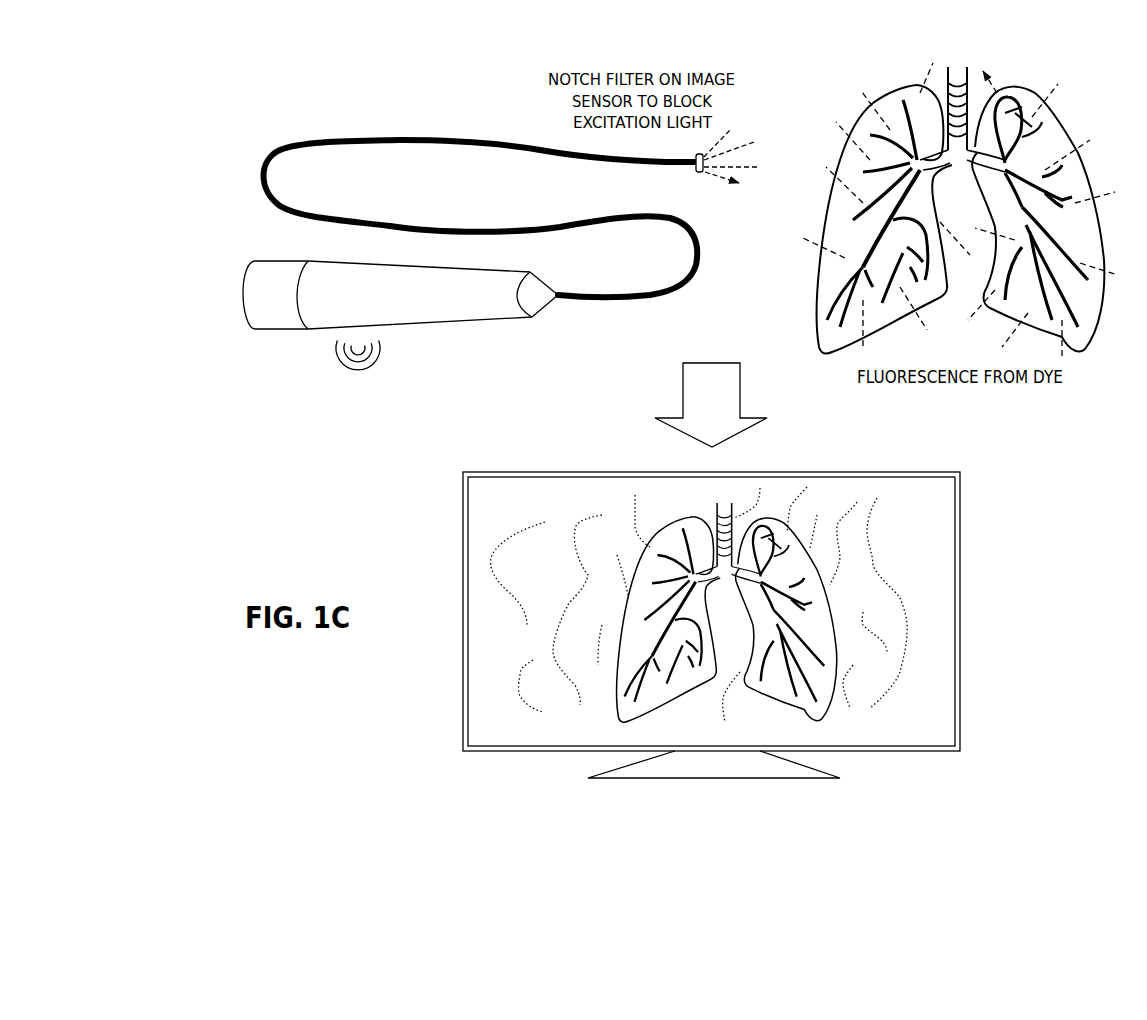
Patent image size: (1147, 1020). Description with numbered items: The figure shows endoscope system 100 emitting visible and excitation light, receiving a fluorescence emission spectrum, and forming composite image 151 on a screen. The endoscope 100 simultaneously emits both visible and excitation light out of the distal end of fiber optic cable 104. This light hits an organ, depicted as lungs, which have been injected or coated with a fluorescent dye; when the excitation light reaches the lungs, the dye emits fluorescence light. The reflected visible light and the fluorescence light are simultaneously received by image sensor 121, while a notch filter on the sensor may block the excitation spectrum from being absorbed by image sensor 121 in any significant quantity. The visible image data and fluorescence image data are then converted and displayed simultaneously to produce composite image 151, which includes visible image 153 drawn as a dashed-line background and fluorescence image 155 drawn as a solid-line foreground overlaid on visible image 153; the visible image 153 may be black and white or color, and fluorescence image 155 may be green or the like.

The endoscope system 100 is at (470, 109).
The fiber optic cable 104 is at (638, 296).
The image sensor 121 is at (697, 172).
The composite image 151 is at (502, 510).
The visible image 153 is at (699, 604).
The fluorescence image 155 is at (727, 612).